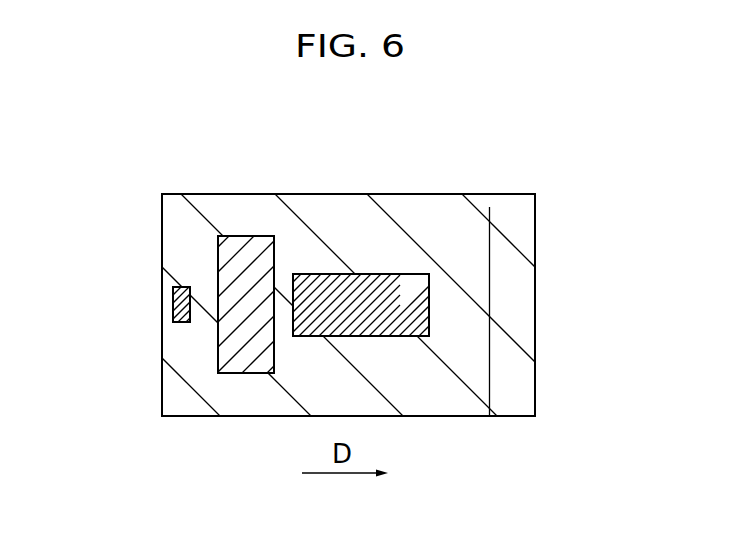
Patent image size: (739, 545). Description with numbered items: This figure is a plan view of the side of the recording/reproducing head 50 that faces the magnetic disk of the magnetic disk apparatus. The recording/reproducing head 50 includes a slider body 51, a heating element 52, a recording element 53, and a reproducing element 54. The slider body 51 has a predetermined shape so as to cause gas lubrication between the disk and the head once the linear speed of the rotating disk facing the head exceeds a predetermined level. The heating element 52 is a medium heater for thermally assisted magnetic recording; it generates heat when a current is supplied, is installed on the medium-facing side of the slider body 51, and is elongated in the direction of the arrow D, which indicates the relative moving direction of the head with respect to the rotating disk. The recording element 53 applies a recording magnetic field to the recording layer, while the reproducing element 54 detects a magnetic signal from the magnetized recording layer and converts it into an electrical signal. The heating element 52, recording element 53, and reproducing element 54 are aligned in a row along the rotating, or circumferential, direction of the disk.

The recording/reproducing head 50 is at (156, 209).
The slider body 51 is at (515, 217).
The heating element 52 is at (380, 338).
The recording element 53 is at (235, 357).
The reproducing element 54 is at (182, 314).